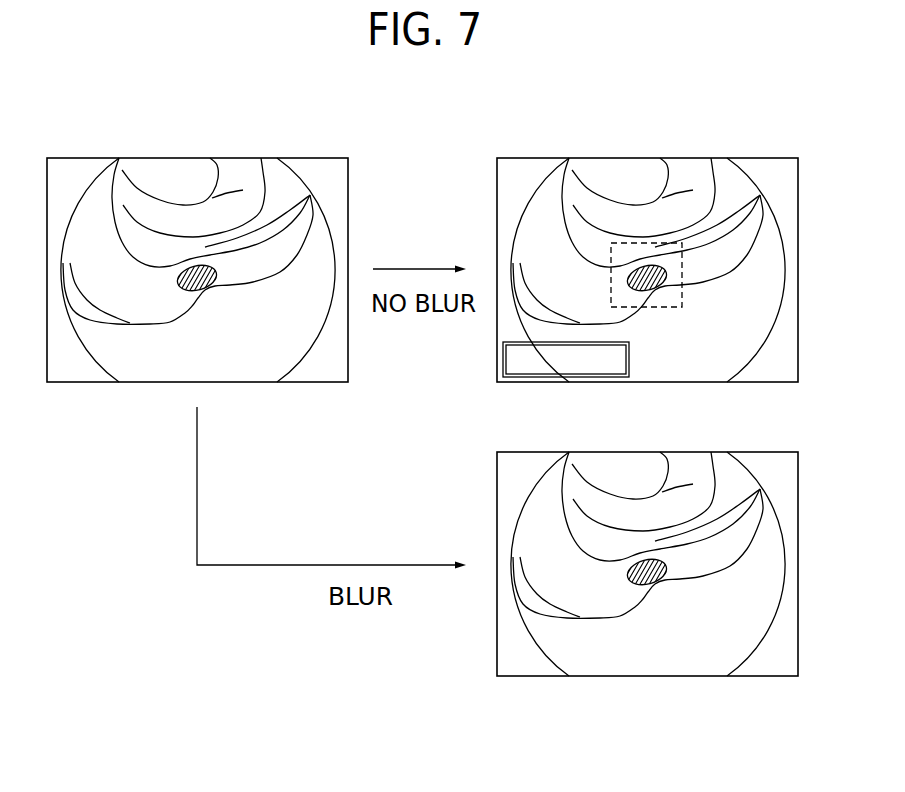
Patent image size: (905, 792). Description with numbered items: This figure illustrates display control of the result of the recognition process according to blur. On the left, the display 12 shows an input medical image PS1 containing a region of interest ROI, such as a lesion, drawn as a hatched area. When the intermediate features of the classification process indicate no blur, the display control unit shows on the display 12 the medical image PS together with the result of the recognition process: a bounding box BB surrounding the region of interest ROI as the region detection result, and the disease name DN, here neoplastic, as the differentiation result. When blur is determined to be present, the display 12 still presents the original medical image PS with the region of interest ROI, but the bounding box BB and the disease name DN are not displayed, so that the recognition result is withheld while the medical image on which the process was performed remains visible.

The display 12 is at (67, 158).
The fold structure in image PS1 is at (183, 172).
The medical image PS is at (653, 173).
The region of interest ROI is at (193, 289).
The bounding box BB is at (682, 290).
The disease name DN is at (629, 362).